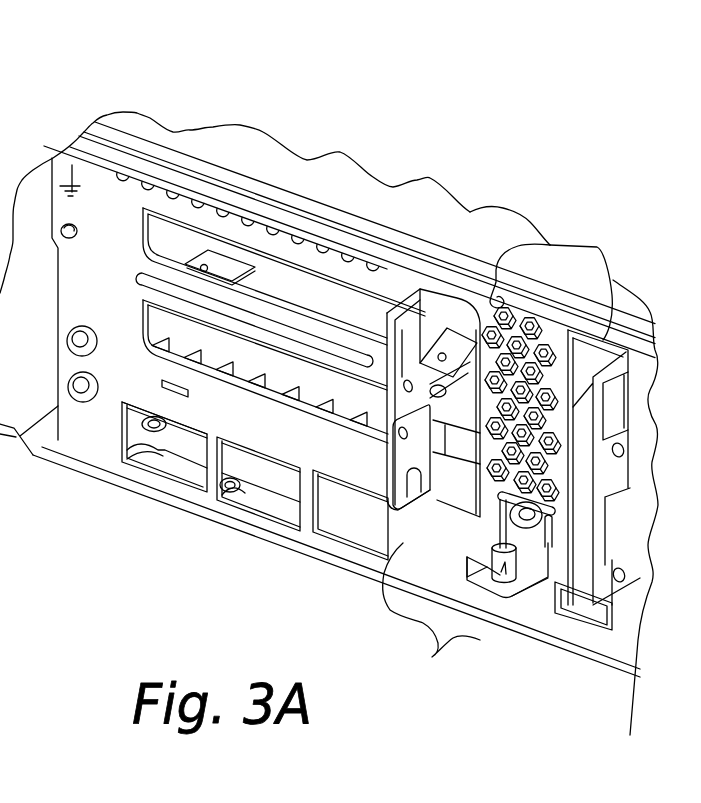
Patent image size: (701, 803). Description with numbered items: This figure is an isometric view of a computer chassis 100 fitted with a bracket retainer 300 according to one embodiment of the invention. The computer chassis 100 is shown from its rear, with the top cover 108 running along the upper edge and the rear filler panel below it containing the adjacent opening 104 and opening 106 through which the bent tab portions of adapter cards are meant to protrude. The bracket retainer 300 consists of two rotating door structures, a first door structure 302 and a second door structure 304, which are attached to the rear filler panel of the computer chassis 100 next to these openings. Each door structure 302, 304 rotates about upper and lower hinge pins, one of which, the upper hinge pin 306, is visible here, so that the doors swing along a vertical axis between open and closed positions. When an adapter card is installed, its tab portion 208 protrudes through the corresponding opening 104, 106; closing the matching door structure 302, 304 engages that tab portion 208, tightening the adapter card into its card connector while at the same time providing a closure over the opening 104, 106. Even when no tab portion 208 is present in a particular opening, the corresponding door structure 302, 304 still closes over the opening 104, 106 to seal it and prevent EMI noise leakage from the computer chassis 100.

The computer chassis 100 is at (105, 182).
The top cover 108 is at (420, 213).
The upper hinge pin 306 is at (556, 245).
The door structure 304 is at (607, 260).
The door structure 302 is at (421, 328).
The opening 104 is at (470, 565).
The tab portion 208 is at (385, 480).
The bracket retainer 300 is at (388, 632).
The opening 106 is at (633, 593).